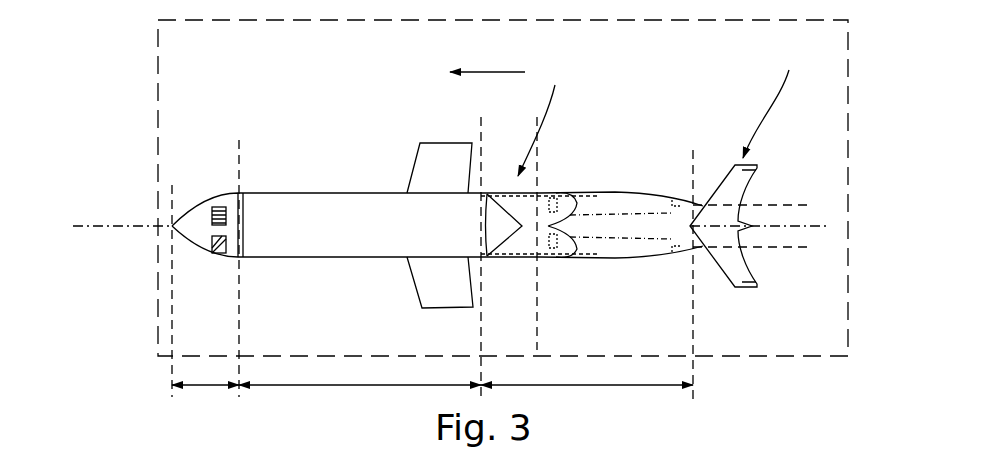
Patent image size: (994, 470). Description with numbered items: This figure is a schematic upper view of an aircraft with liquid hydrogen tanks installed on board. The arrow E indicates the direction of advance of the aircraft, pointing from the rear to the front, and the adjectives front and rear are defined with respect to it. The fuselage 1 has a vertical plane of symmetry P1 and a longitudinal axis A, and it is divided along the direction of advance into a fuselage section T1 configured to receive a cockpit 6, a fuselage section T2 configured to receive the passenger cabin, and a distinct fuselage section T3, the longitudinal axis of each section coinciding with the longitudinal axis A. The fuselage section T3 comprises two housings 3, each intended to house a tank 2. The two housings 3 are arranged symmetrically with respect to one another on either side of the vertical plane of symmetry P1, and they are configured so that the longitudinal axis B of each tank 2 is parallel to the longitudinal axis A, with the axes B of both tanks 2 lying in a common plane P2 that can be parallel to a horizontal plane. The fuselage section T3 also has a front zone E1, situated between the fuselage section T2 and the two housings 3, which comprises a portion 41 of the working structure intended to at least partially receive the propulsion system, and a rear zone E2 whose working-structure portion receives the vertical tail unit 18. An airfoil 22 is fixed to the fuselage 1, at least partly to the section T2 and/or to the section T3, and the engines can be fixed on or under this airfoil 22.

The fuselage 1 is at (346, 156).
The tanks 2 is at (596, 190).
The housings 3 is at (625, 190).
The cockpit 6 is at (216, 206).
The vertical tail unit 18 is at (734, 164).
The airfoil 22 is at (433, 160).
The portion of the working structure 41 is at (537, 122).
The longitudinal axis A is at (118, 226).
The longitudinal axis B is at (768, 204).
The arrow E is at (487, 57).
The front zone E1 is at (546, 118).
The rear zone E2 is at (774, 102).
The vertical plane of symmetry P1 is at (808, 222).
The common plane P2 is at (157, 45).
The fuselage section T1 is at (205, 373).
The fuselage section T2 is at (360, 373).
The fuselage section T3 is at (587, 373).